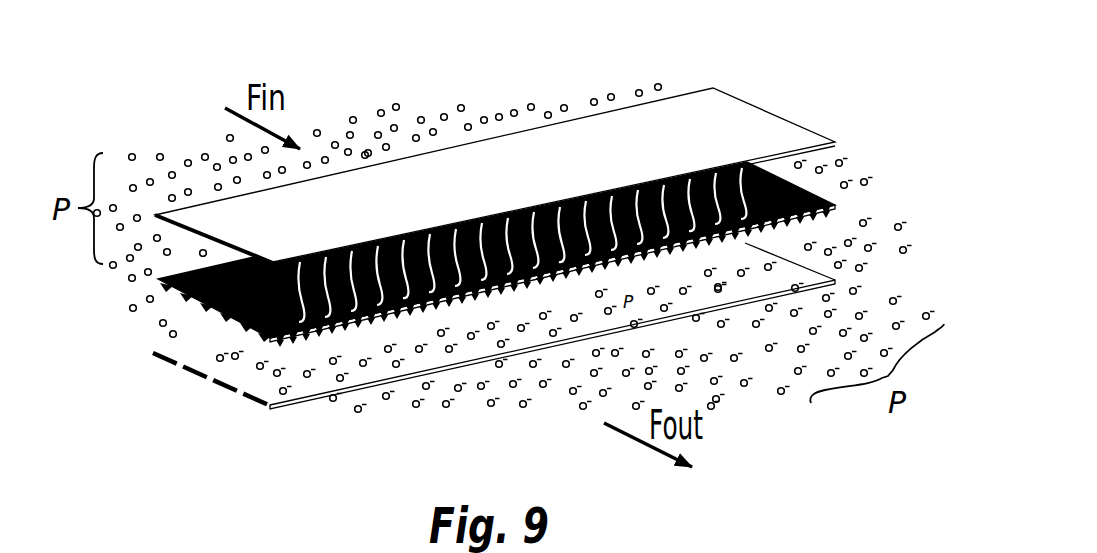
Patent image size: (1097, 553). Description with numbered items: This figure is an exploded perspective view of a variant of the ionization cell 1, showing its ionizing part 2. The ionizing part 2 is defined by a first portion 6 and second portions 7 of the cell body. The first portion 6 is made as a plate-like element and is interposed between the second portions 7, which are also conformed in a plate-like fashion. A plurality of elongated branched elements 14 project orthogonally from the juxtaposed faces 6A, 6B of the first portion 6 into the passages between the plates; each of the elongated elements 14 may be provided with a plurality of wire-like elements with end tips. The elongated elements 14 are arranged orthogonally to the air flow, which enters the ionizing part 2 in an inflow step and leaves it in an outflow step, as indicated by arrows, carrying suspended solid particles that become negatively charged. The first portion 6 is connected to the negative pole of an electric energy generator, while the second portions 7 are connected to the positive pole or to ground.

The ionization cell 1 is at (489, 103).
The ionizing part 2 is at (783, 84).
The first portion 6 is at (152, 287).
The juxtaposed face of the first portion 6A is at (444, 292).
The juxtaposed face of the first portion 6B is at (250, 332).
The second portion 7 is at (713, 87).
The elongated elements 14 is at (748, 193).